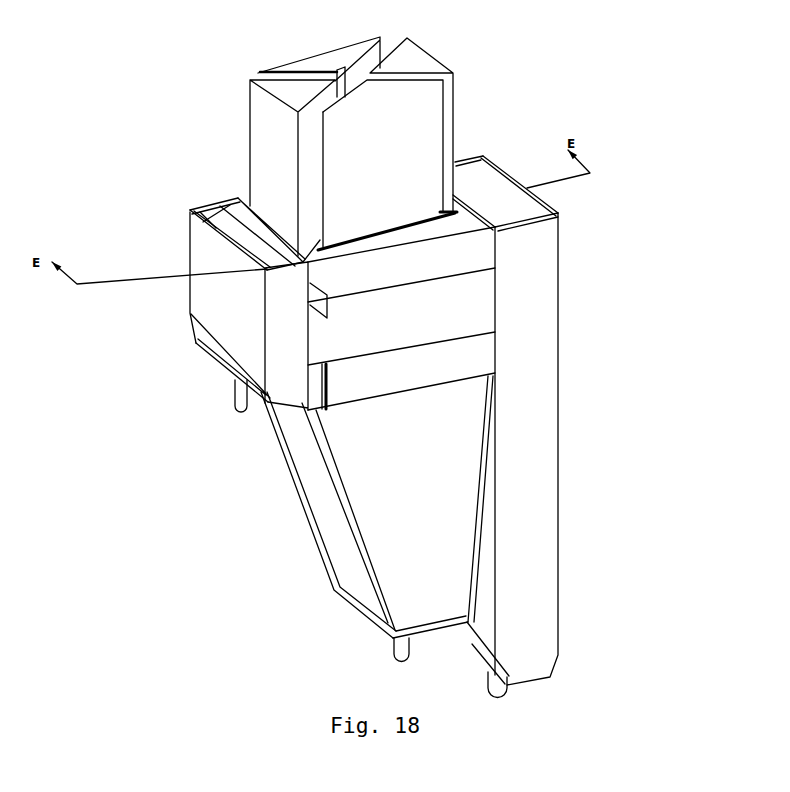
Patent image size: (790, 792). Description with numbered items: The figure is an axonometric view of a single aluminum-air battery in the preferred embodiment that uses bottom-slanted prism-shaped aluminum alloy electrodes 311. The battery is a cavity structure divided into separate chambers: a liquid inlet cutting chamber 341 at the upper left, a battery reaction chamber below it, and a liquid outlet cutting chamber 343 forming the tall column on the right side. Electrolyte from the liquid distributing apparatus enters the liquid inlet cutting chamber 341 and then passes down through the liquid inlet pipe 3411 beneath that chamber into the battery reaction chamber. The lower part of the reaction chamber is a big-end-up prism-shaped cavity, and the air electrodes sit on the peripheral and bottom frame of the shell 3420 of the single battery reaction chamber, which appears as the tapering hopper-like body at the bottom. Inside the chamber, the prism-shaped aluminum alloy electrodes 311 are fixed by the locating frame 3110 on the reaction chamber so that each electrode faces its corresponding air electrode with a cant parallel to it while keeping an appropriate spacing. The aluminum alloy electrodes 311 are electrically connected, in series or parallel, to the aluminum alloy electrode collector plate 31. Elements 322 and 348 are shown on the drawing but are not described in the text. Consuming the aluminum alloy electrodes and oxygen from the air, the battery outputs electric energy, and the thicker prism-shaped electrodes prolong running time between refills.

The aluminum alloy electrode 311 is at (393, 143).
The liquid inlet cutting chamber 341 is at (218, 255).
The aluminum alloy electrode collector plate 31 is at (326, 300).
The locating frame 3110 is at (468, 308).
The liquid outlet cutting chamber 343 is at (525, 465).
The discharge hopper 322 is at (383, 502).
The shell of the single battery reaction chamber 3420 is at (363, 562).
The liquid inlet pipe 3411 is at (233, 404).
The rear foot 348 is at (489, 687).